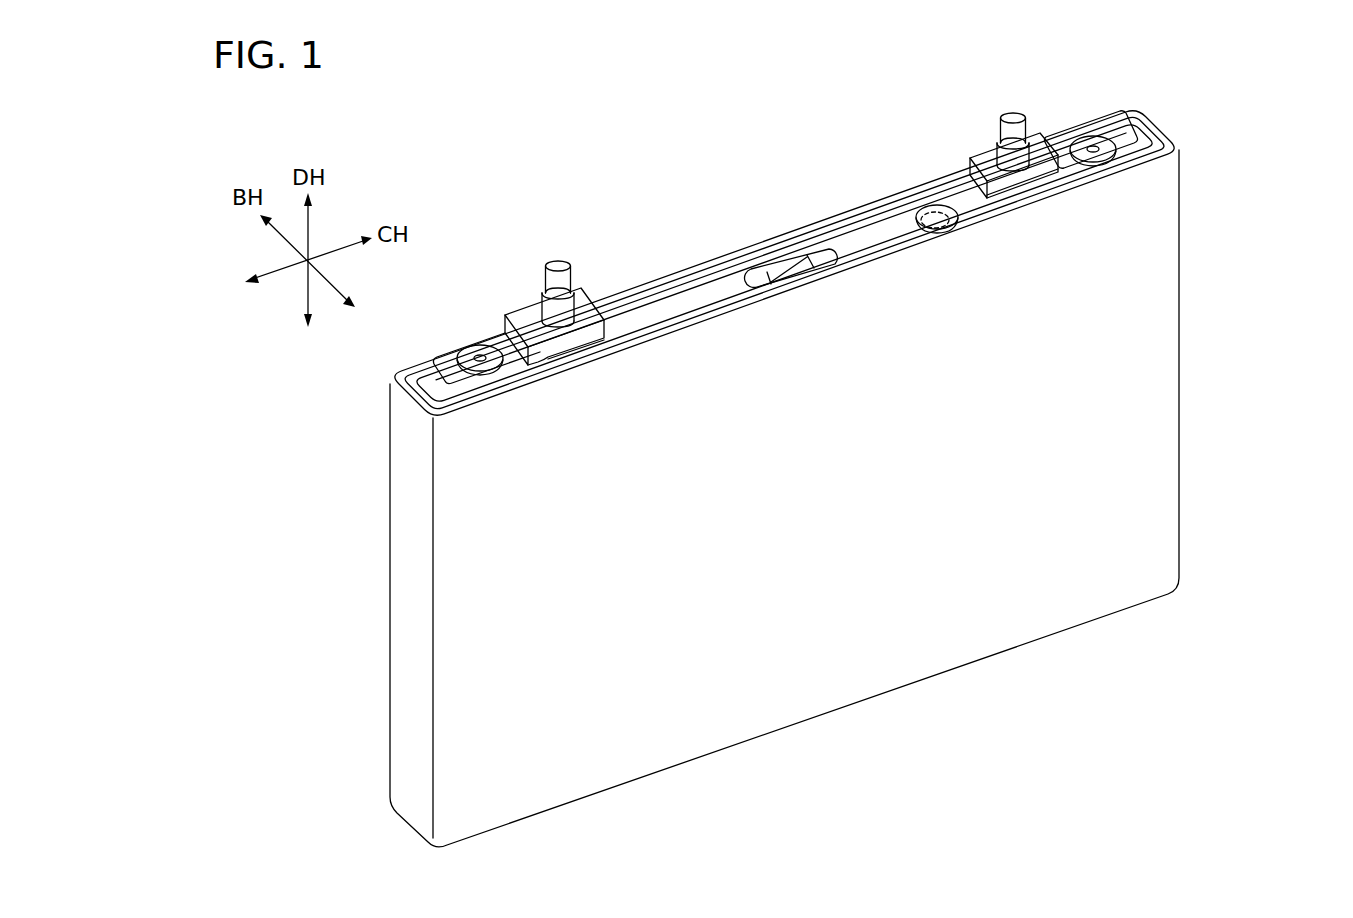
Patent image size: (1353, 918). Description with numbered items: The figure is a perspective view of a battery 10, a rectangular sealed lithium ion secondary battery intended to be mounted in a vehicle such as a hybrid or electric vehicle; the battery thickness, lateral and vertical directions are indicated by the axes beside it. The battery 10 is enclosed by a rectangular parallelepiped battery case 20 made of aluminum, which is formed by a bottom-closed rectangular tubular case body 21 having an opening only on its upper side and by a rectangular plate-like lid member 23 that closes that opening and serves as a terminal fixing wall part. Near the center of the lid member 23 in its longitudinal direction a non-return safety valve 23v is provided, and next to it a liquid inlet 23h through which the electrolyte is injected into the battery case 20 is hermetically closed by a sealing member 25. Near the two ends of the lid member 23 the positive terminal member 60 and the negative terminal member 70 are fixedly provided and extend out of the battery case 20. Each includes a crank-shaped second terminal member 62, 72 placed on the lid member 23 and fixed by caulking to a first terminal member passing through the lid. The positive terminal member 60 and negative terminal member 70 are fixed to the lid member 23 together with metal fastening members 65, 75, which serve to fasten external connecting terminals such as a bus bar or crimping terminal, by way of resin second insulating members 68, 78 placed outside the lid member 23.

The battery 10 is at (1256, 161).
The battery case 20 is at (1163, 405).
The case body 21 is at (1180, 472).
The lid member 23 is at (681, 307).
The safety valve 23v is at (788, 257).
The liquid inlet 23h is at (927, 210).
The sealing member 25 is at (918, 211).
The positive terminal member 60 is at (528, 328).
The second terminal member 62 is at (503, 329).
The fastening member 65 is at (558, 261).
The second insulating member 68 is at (603, 340).
The negative terminal member 70 is at (1040, 157).
The second terminal member 72 is at (1133, 118).
The fastening member 75 is at (1013, 114).
The second insulating member 78 is at (967, 170).